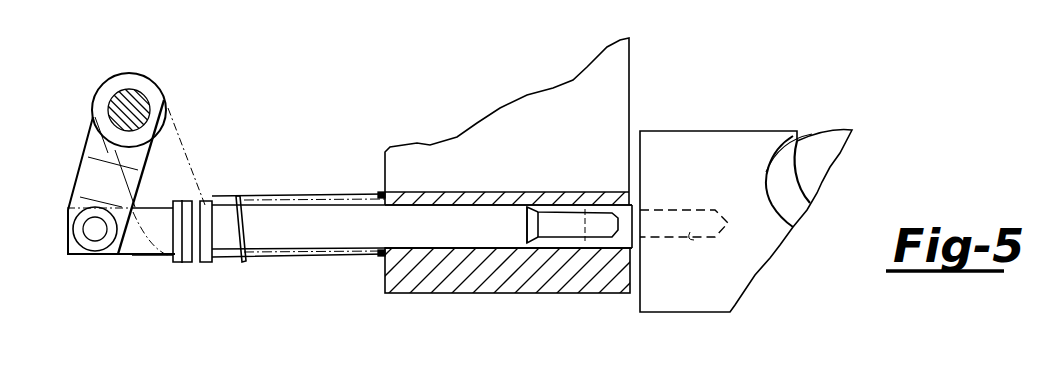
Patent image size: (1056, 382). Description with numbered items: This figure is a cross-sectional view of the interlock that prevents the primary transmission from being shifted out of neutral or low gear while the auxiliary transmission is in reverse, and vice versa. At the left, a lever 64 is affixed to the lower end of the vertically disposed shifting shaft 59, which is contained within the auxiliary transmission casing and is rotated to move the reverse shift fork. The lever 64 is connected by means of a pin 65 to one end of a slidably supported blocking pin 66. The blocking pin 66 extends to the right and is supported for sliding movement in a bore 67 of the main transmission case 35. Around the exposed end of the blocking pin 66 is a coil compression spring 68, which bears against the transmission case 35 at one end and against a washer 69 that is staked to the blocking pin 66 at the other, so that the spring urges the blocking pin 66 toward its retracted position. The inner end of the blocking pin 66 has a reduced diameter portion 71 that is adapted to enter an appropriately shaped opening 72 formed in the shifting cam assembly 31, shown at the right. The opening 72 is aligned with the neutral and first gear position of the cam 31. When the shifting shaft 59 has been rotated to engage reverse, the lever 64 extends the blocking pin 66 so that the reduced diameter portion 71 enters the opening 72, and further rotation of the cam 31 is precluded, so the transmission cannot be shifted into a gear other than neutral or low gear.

The shifting cam assembly 31 is at (772, 130).
The main transmission case 35 is at (508, 293).
The shifting shaft 59 is at (150, 102).
The lever 64 is at (152, 82).
The pin 65 is at (95, 229).
The blocking pin 66 is at (318, 193).
The bore 67 is at (430, 197).
The coil compression spring 68 is at (241, 262).
The washer 69 is at (182, 263).
The reduced diameter portion 71 is at (558, 210).
The opening 72 is at (698, 237).